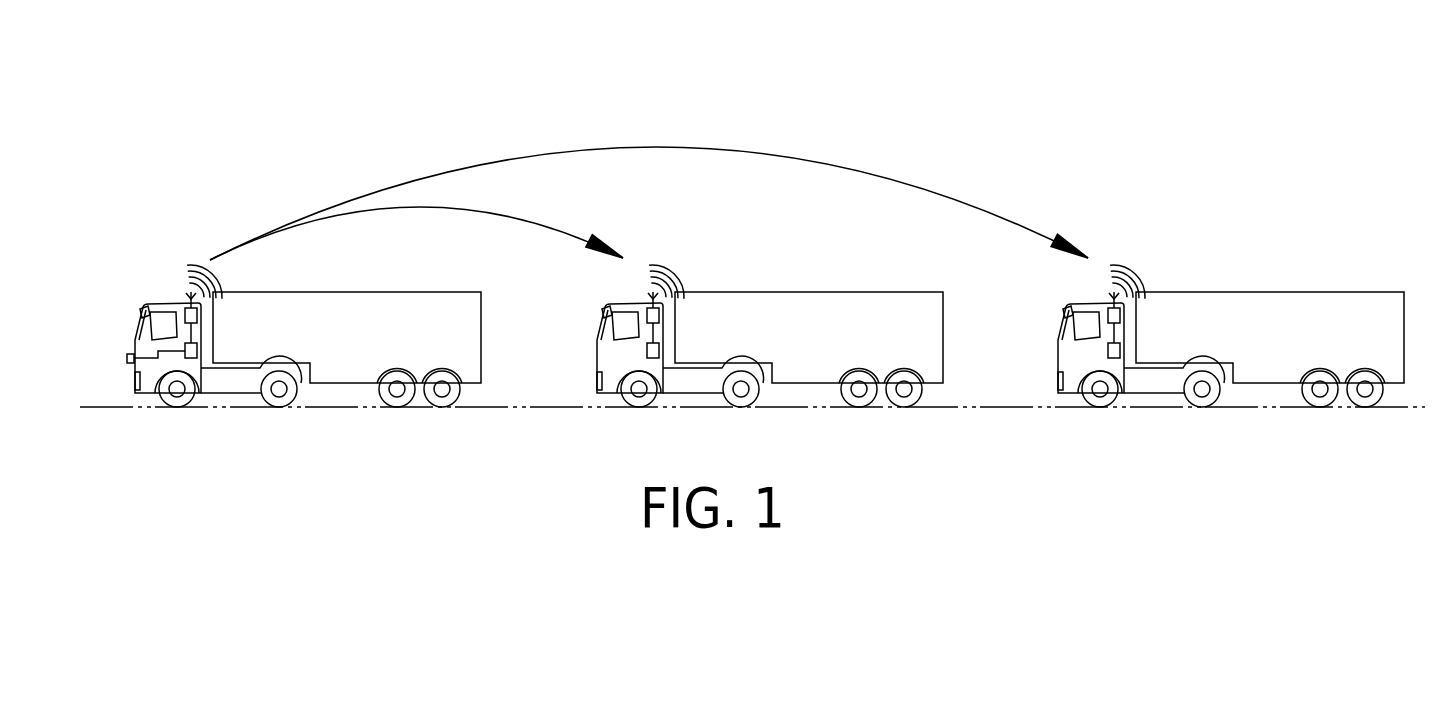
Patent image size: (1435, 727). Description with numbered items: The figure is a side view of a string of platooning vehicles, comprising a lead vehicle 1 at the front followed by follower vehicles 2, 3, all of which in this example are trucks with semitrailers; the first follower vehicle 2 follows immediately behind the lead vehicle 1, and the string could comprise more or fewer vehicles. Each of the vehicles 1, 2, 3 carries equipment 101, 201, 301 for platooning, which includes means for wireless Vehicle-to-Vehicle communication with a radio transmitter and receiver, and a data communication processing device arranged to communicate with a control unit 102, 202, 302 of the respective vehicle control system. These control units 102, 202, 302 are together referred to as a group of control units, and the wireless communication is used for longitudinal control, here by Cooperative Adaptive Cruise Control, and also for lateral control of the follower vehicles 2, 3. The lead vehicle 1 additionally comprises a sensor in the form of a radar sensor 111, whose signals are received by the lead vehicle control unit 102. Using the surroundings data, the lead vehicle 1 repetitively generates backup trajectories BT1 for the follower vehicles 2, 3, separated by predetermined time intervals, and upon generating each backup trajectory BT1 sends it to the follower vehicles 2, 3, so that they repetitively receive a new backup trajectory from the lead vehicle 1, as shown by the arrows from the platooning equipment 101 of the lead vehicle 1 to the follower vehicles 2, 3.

The lead vehicle 1 is at (265, 340).
The follower vehicle 2 is at (730, 319).
The follower vehicle 3 is at (1193, 320).
The platooning equipment 101 is at (183, 298).
The control unit 102 is at (197, 351).
The radar sensor 111 is at (127, 358).
The platooning equipment 201 is at (646, 300).
The control unit 202 is at (646, 349).
The platooning equipment 301 is at (1108, 300).
The control unit 302 is at (1108, 353).
The backup trajectory BT1 is at (443, 207).